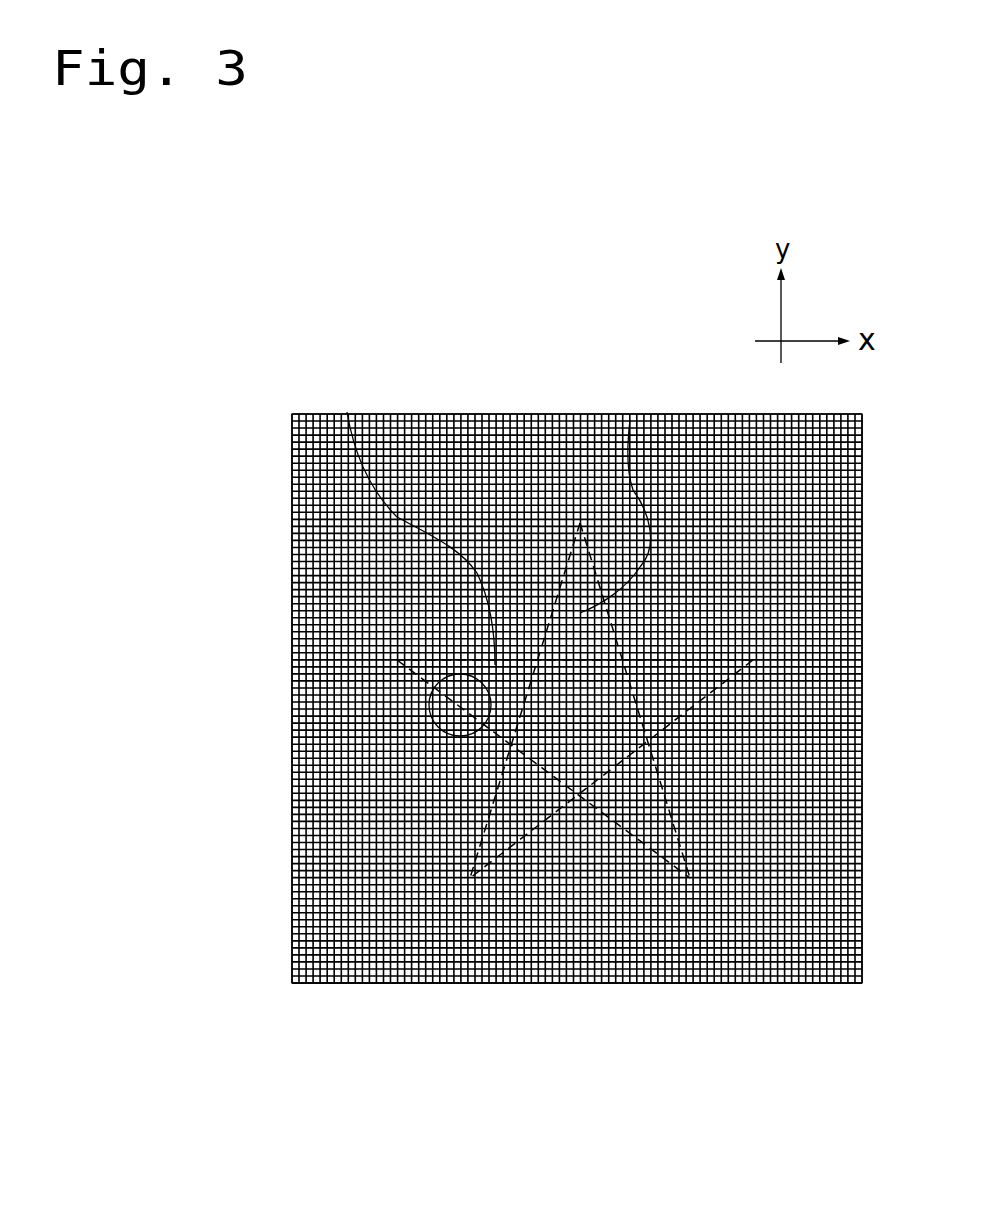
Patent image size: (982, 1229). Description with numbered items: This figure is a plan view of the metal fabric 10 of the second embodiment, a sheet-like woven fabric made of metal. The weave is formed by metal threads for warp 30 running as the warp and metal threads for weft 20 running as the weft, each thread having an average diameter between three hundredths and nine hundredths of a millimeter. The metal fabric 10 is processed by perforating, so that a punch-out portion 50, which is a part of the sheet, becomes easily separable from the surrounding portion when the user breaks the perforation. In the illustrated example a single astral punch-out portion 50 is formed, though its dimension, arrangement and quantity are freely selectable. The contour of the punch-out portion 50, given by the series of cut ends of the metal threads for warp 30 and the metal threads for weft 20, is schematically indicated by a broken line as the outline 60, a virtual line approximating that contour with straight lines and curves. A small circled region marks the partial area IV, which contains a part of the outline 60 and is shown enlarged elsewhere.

The metal fabric 10 is at (503, 334).
The metal threads for weft 20 is at (545, 983).
The metal threads for warp 30 is at (292, 932).
The punch-out portion 50 is at (630, 420).
The outline 60 is at (347, 412).
The partial area IV is at (437, 740).